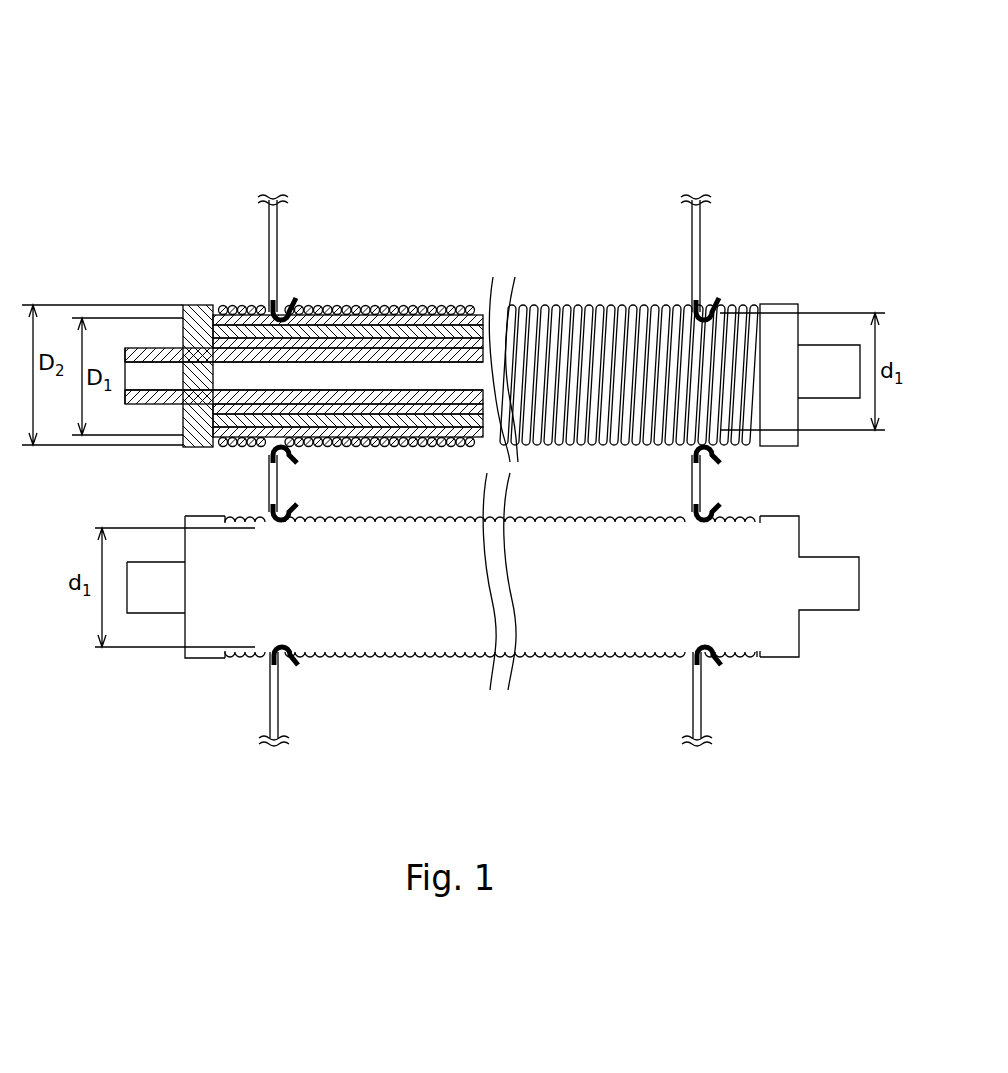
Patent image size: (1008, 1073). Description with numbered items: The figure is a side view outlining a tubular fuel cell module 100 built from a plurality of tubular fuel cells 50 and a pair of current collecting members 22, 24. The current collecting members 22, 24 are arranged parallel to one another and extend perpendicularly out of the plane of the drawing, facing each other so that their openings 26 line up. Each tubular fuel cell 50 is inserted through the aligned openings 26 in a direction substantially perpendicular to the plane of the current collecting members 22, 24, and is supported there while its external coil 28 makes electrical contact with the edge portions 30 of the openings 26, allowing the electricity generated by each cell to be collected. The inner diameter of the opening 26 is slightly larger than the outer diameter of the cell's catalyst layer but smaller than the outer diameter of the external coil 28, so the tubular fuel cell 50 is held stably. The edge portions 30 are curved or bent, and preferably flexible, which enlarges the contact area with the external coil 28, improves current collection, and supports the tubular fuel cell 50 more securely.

The tubular fuel cell module 100 is at (576, 127).
The current collecting member 22 is at (268, 242).
The current collecting member 24 is at (700, 240).
The opening 26 is at (287, 590).
The external coil 28 is at (553, 303).
The edge portion 30 is at (724, 293).
The tubular fuel cell 50 is at (400, 303).